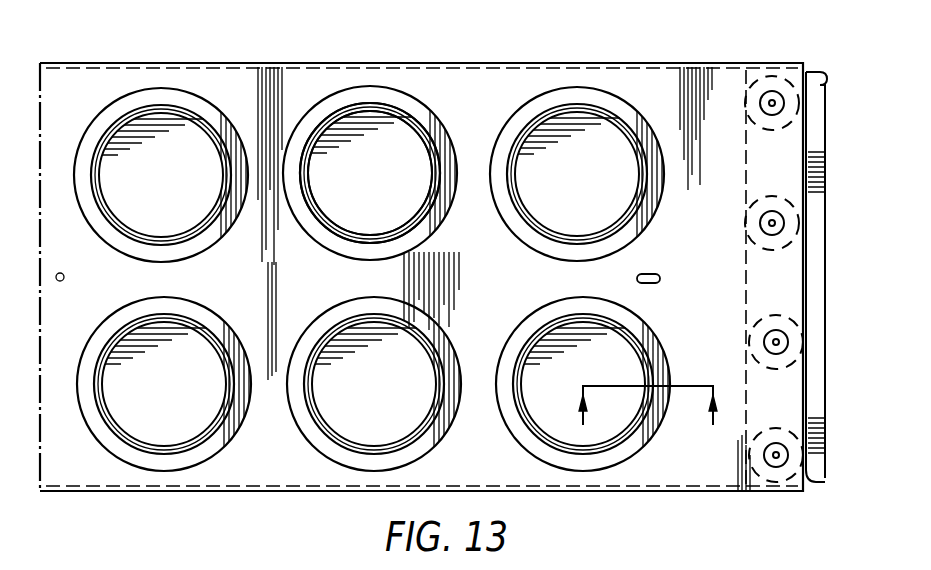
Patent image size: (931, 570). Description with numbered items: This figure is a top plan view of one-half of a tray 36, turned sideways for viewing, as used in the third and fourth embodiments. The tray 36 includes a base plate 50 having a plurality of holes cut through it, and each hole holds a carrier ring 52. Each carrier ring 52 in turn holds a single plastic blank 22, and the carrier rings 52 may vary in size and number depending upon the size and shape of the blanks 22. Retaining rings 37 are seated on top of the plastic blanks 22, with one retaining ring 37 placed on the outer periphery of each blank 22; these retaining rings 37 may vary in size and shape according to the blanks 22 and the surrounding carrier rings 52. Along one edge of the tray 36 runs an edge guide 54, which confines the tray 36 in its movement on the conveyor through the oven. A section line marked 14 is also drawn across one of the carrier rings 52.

The section line 14- 14 is at (650, 409).
The plastic blank 22 is at (367, 147).
The tray 36 is at (462, 58).
The retaining ring 37 is at (318, 137).
The base plate 50 is at (650, 95).
The carrier ring 52 is at (393, 98).
The edge guide 54 is at (823, 223).